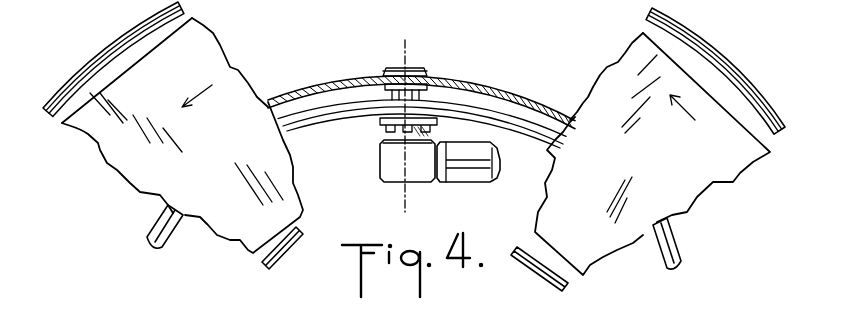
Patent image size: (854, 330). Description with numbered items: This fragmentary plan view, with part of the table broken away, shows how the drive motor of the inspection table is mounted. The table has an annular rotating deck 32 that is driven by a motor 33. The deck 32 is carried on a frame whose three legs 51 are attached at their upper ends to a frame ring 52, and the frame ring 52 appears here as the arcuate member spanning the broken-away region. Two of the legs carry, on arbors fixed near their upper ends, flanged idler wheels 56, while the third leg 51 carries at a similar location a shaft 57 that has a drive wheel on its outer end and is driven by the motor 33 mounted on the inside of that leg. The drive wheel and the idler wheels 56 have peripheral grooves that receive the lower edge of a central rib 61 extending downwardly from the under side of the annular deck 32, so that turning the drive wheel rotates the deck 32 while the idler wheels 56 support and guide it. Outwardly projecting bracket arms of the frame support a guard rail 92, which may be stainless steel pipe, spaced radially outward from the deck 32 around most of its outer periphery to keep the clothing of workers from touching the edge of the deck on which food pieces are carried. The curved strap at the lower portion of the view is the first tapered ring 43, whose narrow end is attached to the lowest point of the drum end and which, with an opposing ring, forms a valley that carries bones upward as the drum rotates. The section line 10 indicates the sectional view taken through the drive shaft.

The section line 10 is at (420, 48).
The annular rotating deck 32 is at (123, 85).
The motor 33 is at (462, 172).
The first tapered ring 43 is at (535, 258).
The leg 51 is at (428, 107).
The frame ring 52 is at (299, 128).
The flanged idler wheel 56 is at (420, 72).
The shaft 57 is at (398, 118).
The central rib 61 is at (316, 65).
The guard rail 92 is at (672, 26).